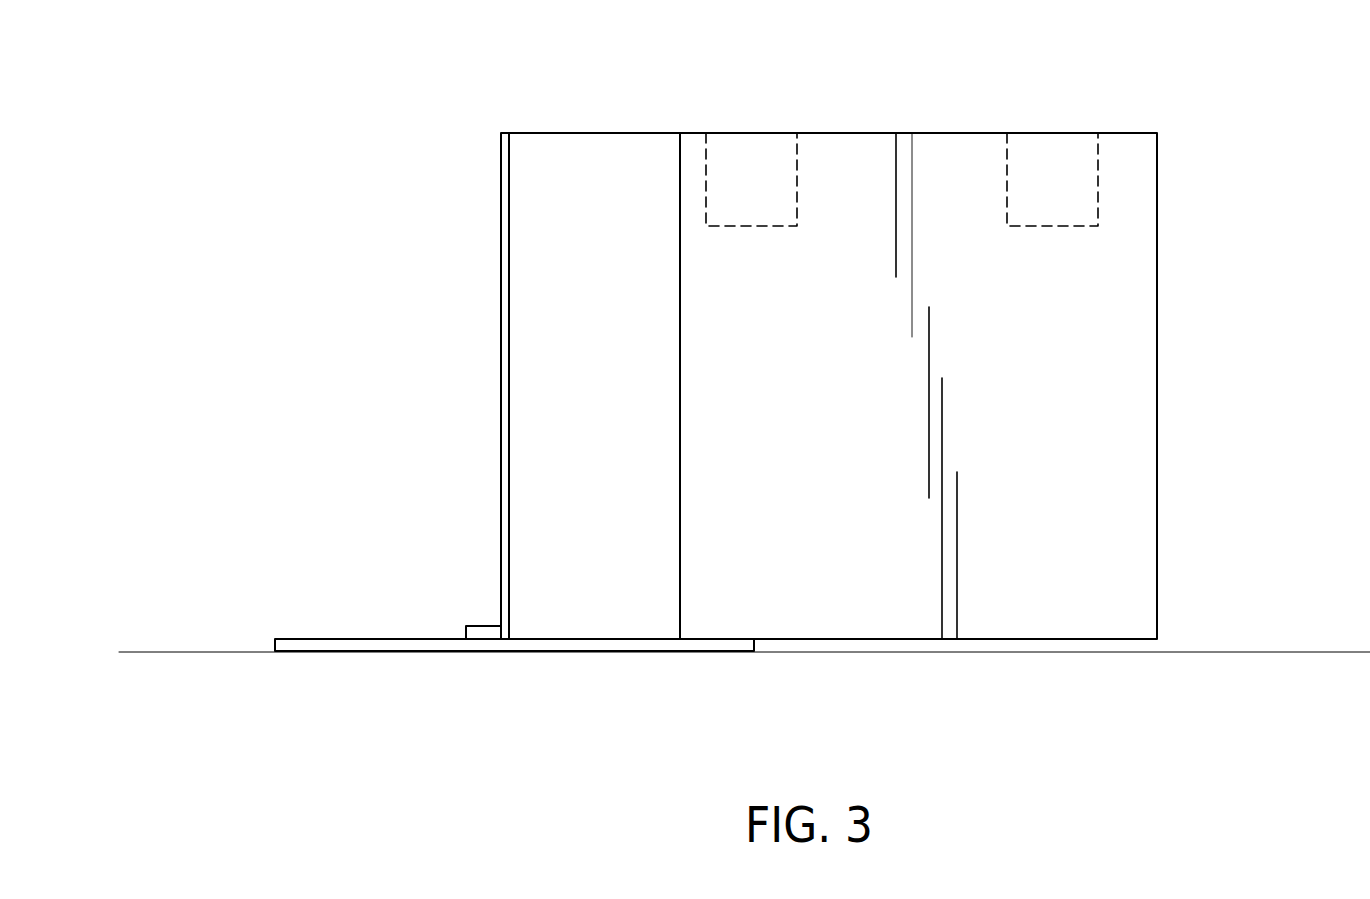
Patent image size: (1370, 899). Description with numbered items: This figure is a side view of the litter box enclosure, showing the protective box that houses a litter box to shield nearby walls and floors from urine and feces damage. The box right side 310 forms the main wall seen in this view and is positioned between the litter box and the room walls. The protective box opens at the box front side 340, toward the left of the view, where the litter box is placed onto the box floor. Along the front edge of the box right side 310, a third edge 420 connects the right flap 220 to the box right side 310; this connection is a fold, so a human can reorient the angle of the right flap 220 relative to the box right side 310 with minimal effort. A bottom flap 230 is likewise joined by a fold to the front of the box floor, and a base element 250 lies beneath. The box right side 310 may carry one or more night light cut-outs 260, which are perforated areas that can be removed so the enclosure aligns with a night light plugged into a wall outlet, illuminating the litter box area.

The right flap 220 is at (590, 158).
The bottom flap 230 is at (467, 626).
The base plate 250 is at (371, 645).
The night light cut-outs 260 is at (1043, 163).
The box right side 310 is at (1118, 481).
The box front side 340 is at (425, 278).
The third edge 420 is at (680, 572).